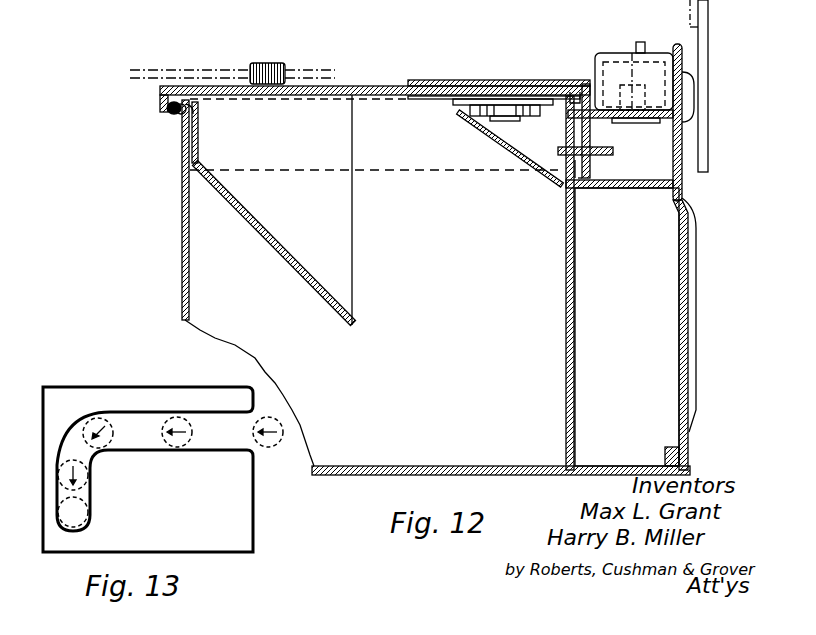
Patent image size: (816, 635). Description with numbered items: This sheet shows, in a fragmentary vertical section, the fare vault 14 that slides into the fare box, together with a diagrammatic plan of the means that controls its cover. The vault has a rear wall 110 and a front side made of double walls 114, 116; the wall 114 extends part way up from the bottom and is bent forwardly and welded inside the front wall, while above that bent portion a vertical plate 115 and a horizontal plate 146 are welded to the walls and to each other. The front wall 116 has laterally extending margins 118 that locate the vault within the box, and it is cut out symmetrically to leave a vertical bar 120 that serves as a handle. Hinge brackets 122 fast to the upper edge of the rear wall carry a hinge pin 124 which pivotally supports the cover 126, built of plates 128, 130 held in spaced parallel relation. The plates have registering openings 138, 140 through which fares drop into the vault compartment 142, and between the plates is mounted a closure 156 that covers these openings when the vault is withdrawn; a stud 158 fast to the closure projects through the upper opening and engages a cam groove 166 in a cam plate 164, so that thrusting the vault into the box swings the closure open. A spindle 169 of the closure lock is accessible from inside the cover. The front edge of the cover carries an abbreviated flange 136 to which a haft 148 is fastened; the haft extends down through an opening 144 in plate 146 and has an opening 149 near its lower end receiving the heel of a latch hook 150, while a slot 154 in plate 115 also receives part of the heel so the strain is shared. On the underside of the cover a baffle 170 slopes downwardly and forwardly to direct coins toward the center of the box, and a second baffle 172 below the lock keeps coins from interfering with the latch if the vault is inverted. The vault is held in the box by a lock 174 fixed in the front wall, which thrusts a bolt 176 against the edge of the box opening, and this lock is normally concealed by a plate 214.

In FIG. 12, the film cassette assembly 14 is at (705, 247).
In FIG. 12, the side wall 110 is at (182, 288).
In FIG. 12, the wall 114 is at (565, 318).
In FIG. 12, the vertical plate 115 is at (562, 160).
In FIG. 12, the wall 116 is at (684, 195).
In FIG. 12, the laterally extending margins 118 is at (686, 466).
In FIG. 12, the vertical bar 120 is at (694, 313).
In FIG. 12, the hinge brackets 122 is at (186, 130).
In FIG. 12, the hinge pin 124 is at (166, 110).
In FIG. 12, the cover 126 is at (375, 63).
In FIG. 12, the plate 128 is at (174, 85).
In FIG. 12, the plate 130 is at (441, 105).
In FIG. 12, the abbreviated flange 136 is at (580, 84).
In FIG. 12, the opening 138 is at (408, 80).
In FIG. 12, the opening 140 is at (404, 100).
In FIG. 12, the compartment 142 is at (597, 190).
In FIG. 12, the opening 144 is at (586, 124).
In FIG. 12, the horizontal plate 146 is at (660, 124).
In FIG. 12, the haft 148 is at (592, 190).
In FIG. 12, the opening 149 is at (612, 156).
In FIG. 12, the latch hook 150 is at (562, 190).
In FIG. 12, the slot 154 is at (565, 158).
In FIG. 12, the closure 156 is at (364, 85).
In FIG. 12, the stud 158 is at (284, 50).
In FIG. 13, the stud 158 is at (90, 417).
In FIG. 12, the cam plate 164 is at (222, 50).
In FIG. 13, the cam plate 164 is at (240, 518).
In FIG. 13, the cam groove 166 is at (143, 413).
In FIG. 12, the spindle 169 is at (525, 80).
In FIG. 12, the baffle 170 is at (263, 232).
In FIG. 12, the baffle 172 is at (515, 154).
In FIG. 12, the lock 174 is at (695, 86).
In FIG. 12, the bolt 176 is at (641, 42).
In FIG. 12, the plate 214 is at (711, 110).